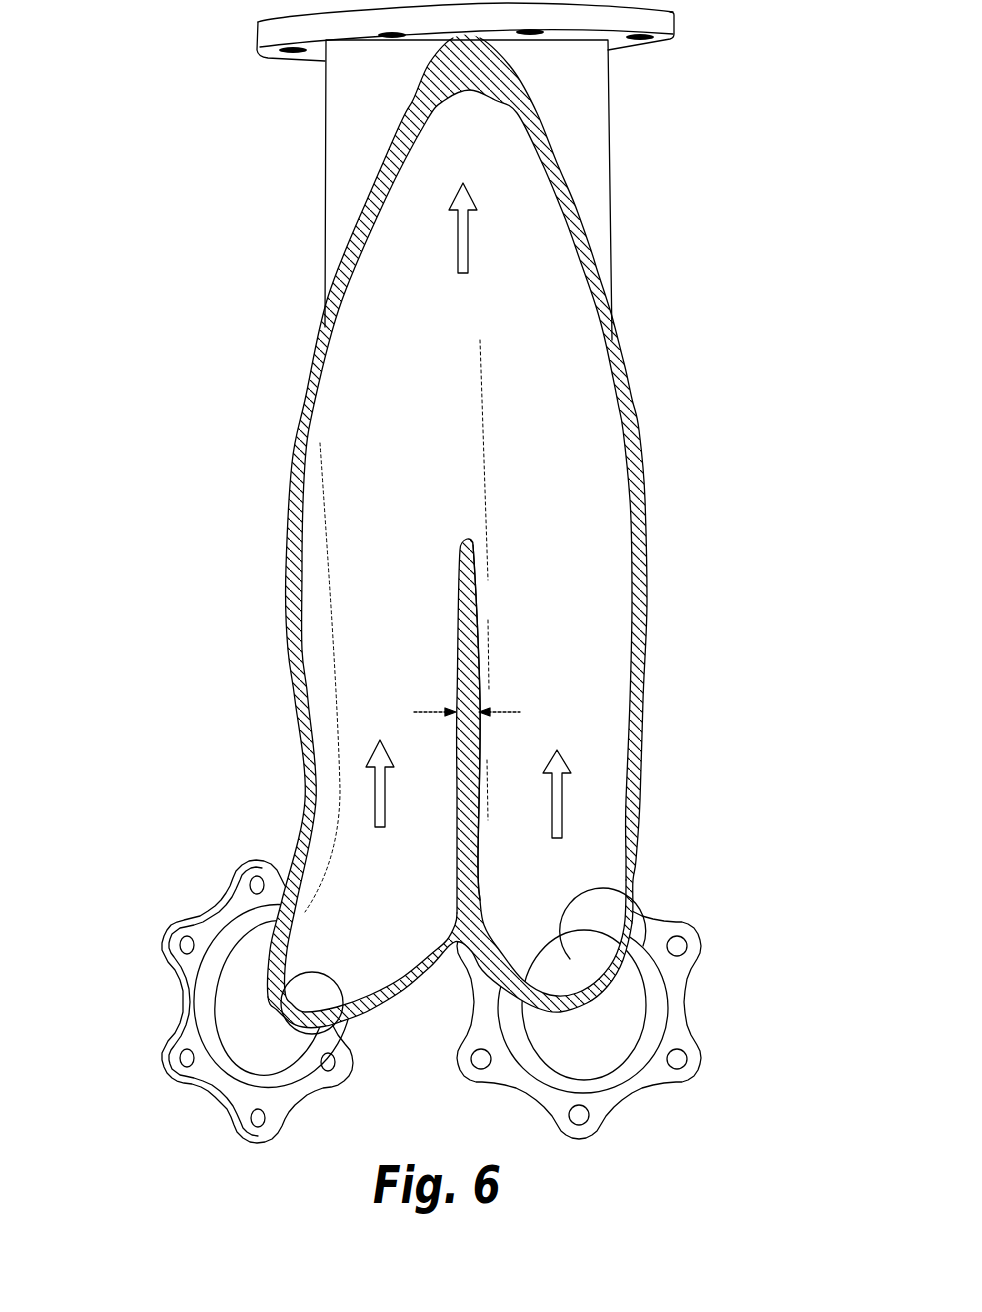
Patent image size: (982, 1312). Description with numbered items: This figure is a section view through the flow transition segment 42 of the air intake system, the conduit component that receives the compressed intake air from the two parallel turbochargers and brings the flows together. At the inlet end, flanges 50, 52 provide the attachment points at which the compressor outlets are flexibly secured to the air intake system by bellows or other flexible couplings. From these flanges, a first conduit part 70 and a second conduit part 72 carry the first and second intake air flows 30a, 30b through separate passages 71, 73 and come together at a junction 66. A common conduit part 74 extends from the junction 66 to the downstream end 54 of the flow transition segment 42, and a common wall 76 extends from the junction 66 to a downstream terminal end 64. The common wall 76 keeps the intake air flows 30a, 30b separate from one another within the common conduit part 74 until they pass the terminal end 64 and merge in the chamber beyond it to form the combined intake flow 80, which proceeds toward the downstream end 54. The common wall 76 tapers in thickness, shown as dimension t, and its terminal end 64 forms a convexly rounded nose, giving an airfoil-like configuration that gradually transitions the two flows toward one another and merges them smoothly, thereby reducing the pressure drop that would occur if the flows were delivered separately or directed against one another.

The flow transition segment 42 is at (206, 264).
The downstream end 54 is at (676, 32).
The common conduit part 74 is at (326, 165).
The combined intake flow 80 is at (472, 258).
The downstream terminal end 64 is at (463, 537).
The common wall 76 is at (478, 603).
The second conduit part 72 is at (288, 650).
The first conduit part 70 is at (641, 727).
The junction 66 is at (450, 940).
The second intake air flow 30b is at (375, 787).
The first intake air flow 30a is at (562, 815).
The passage 71 is at (622, 889).
The passage 73 is at (341, 1024).
The flange 52 is at (165, 1008).
The flange 50 is at (694, 1000).